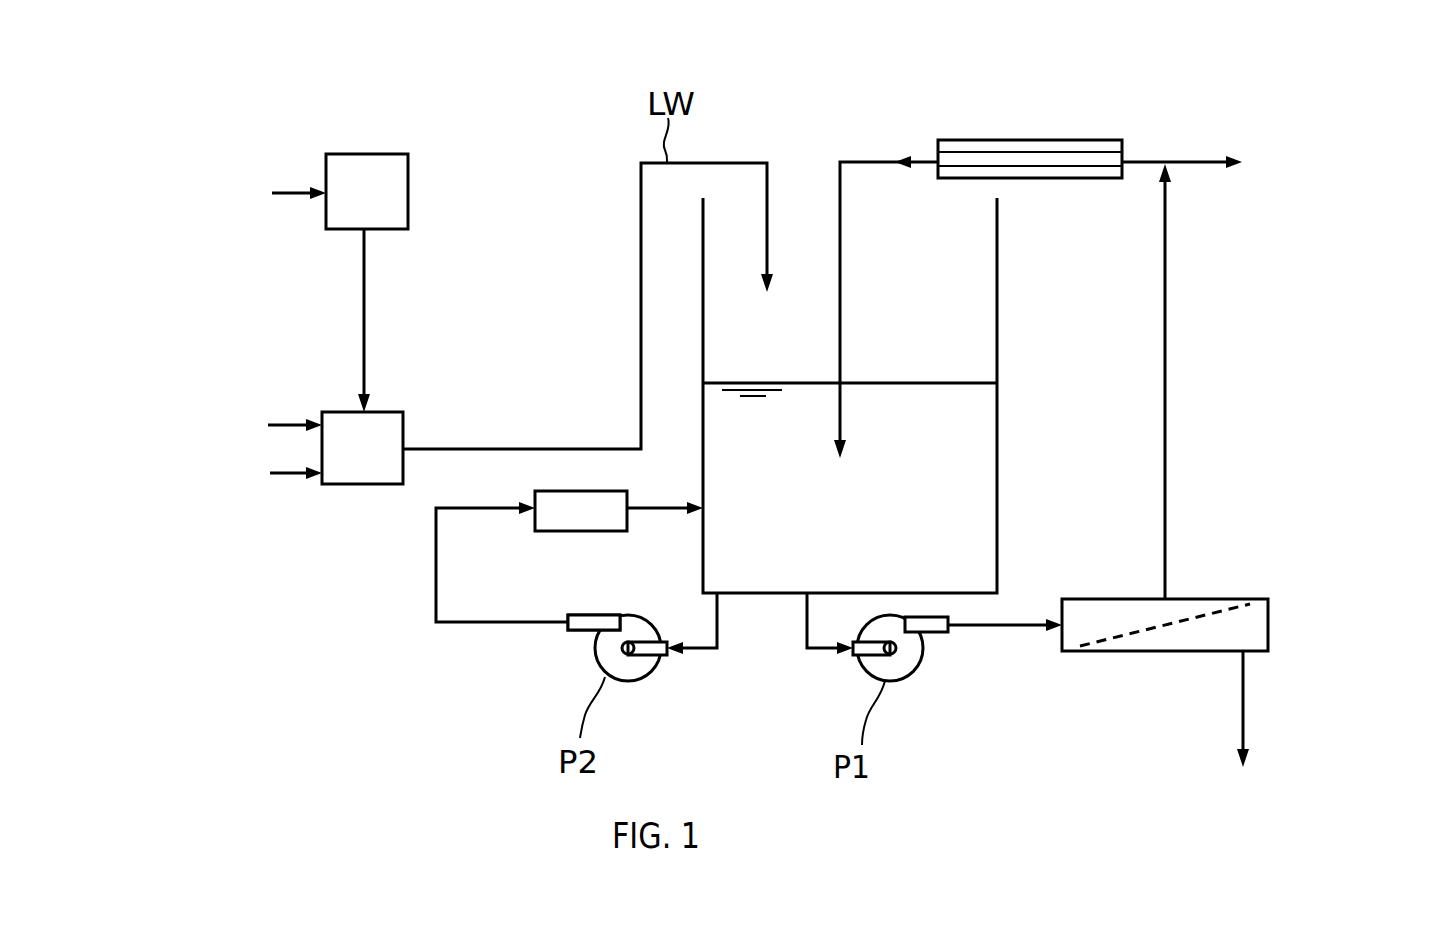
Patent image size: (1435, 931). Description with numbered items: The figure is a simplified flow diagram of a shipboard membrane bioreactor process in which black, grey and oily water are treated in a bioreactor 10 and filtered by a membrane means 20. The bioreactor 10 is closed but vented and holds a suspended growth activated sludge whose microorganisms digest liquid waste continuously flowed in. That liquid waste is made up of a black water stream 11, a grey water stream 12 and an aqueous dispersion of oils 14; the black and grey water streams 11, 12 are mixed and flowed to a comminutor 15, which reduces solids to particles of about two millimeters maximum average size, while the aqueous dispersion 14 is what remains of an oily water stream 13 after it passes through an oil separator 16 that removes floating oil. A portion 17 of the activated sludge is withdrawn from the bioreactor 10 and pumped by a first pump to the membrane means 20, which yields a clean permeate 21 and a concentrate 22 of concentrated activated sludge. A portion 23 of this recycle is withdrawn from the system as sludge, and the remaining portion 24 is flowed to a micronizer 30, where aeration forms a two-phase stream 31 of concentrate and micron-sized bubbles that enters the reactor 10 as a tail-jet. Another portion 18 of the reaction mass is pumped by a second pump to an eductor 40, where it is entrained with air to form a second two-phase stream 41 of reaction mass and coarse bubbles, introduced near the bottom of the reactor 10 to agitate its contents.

The bioreactor 10 is at (850, 395).
The black water stream 11 is at (282, 424).
The grey water stream 12 is at (270, 473).
The oily water stream 13 is at (282, 192).
The aqueous dispersion of oils 14 is at (364, 350).
The comminutor 15 is at (365, 484).
The oil separator 16 is at (408, 156).
The portion of activated sludge 17 is at (807, 648).
The portion of reaction mass 18 is at (717, 612).
The membrane means 20 is at (1268, 625).
The permeate 21 is at (1243, 697).
The concentrate 22 is at (1165, 395).
The portion of the recycle 23 is at (1177, 157).
The remaining portion 24 is at (1133, 155).
The micronizer 30 is at (1068, 178).
The two-phase stream 31 is at (840, 342).
The eductor 40 is at (552, 531).
The second two-phase stream 41 is at (675, 505).